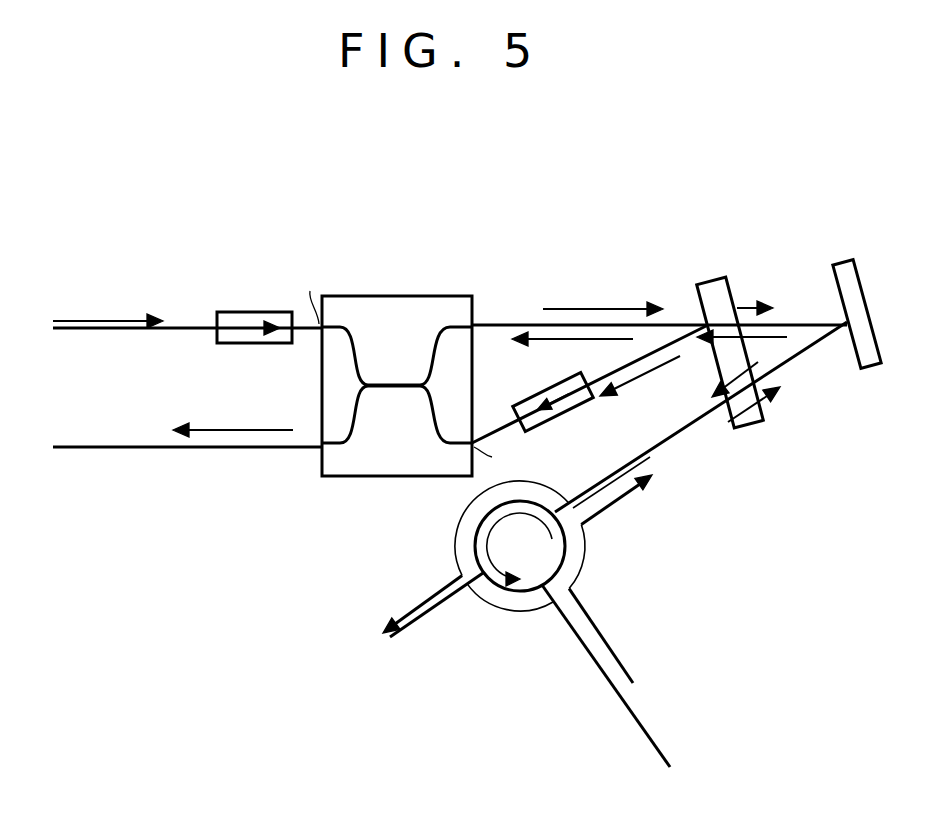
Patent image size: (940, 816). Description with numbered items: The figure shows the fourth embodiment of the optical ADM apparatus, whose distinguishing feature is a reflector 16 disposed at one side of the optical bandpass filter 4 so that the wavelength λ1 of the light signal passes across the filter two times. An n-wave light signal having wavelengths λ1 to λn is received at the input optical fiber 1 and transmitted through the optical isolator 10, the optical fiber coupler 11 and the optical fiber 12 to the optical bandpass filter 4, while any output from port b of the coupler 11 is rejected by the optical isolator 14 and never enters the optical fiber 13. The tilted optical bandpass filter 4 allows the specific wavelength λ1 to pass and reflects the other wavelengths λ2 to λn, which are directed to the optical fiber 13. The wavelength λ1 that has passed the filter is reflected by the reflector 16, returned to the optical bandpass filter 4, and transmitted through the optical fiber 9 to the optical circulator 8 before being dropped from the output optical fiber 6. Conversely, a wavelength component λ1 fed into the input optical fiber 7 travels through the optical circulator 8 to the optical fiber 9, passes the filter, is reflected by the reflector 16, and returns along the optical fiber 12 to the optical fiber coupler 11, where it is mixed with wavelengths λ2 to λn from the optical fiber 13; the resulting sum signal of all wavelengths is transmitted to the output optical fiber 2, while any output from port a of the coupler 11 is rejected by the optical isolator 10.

The input optical fiber 1 is at (158, 330).
The output optical fiber 2 is at (173, 450).
The optical bandpass filter 4 is at (755, 428).
The output optical fiber 6 is at (440, 603).
The input optical fiber 7 is at (630, 712).
The optical circulator 8 is at (518, 592).
The optical fiber 9 is at (667, 443).
The optical isolator 10 is at (250, 310).
The optical fiber coupler 11 is at (406, 292).
The optical fiber 12 is at (503, 322).
The optical fiber 13 is at (598, 378).
The optical isolator 14 is at (526, 400).
The reflector 16 is at (868, 370).